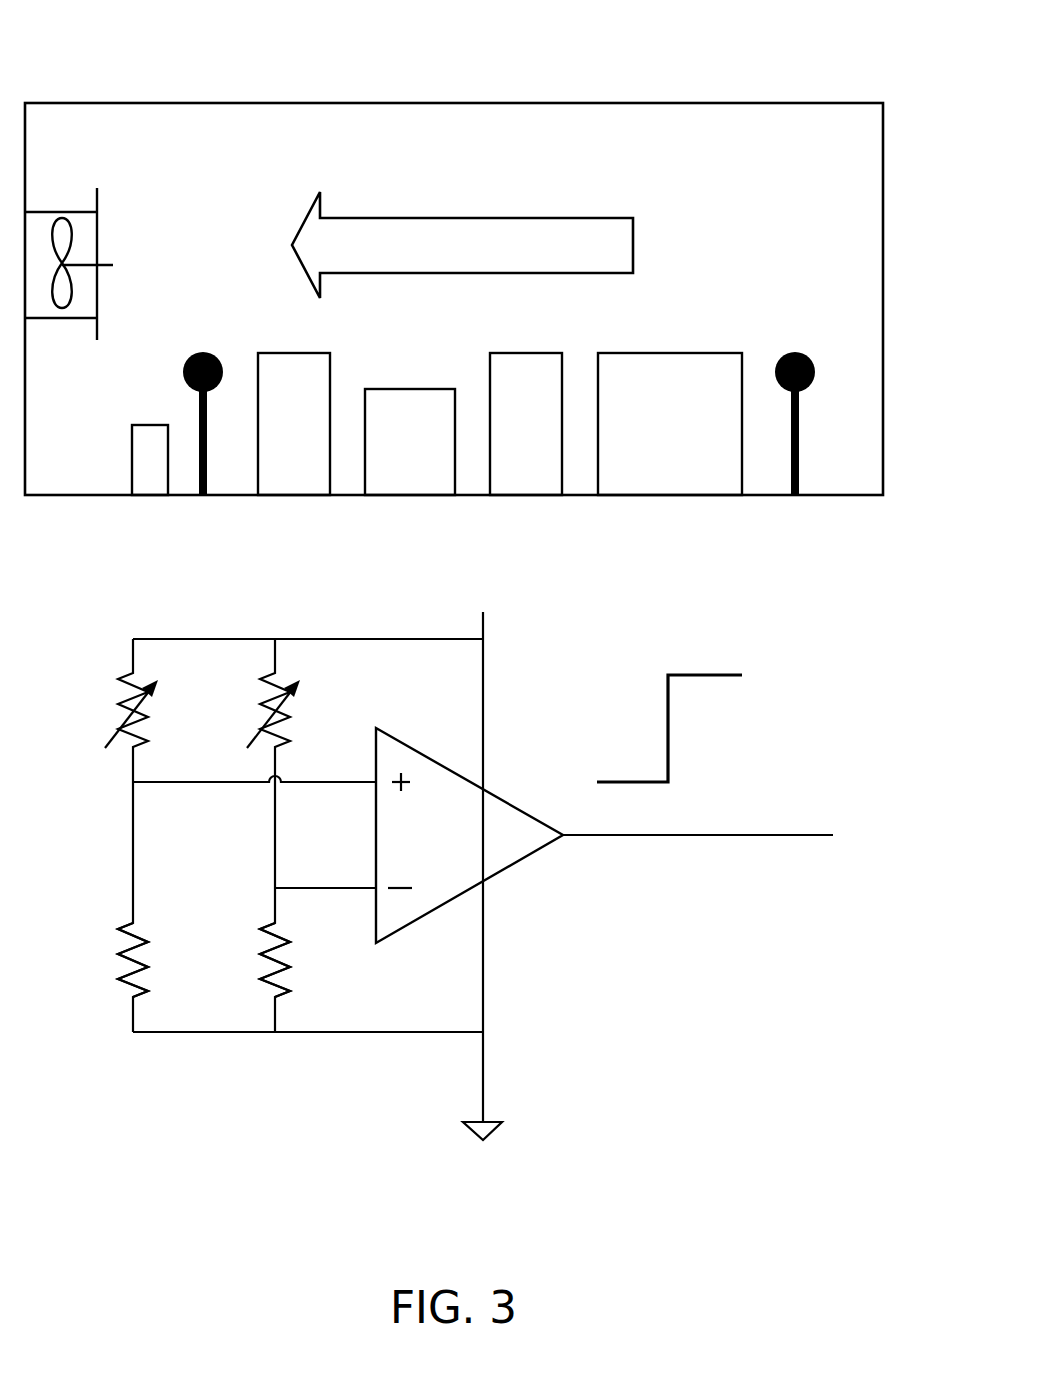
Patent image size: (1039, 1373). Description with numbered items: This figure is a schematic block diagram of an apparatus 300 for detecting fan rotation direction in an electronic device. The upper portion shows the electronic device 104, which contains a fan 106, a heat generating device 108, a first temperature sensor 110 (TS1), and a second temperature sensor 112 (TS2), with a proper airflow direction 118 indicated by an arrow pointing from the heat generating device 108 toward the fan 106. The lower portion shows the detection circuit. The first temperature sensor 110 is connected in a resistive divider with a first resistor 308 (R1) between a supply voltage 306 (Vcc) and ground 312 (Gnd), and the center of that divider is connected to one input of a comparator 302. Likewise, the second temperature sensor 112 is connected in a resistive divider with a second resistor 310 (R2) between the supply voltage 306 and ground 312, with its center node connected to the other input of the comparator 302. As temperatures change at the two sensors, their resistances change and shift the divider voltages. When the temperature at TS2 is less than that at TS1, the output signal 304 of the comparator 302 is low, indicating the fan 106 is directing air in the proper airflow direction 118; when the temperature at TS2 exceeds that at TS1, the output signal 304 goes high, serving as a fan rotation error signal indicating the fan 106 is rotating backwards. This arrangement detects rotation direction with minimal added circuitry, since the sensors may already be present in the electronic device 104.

The apparatus for detecting fan rotation direction 300 is at (160, 62).
The electronic device 104 is at (472, 166).
The fan 106 is at (80, 392).
The heat generating device 108 is at (688, 479).
The first temperature sensor 110 is at (60, 719).
The second temperature sensor 112 is at (320, 719).
The proper airflow direction 118 is at (612, 257).
The comparator 302 is at (590, 932).
The output signal 304 is at (837, 959).
The supply voltage 306 is at (500, 594).
The first resistor 308 is at (93, 984).
The second resistor 310 is at (350, 984).
The ground 312 is at (537, 1201).